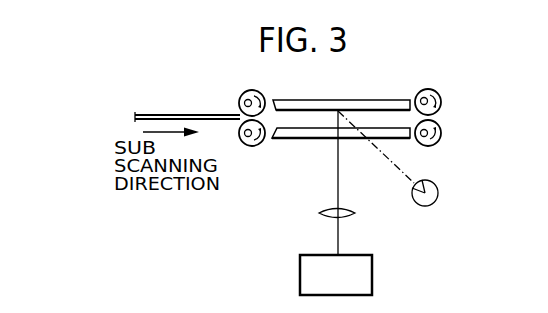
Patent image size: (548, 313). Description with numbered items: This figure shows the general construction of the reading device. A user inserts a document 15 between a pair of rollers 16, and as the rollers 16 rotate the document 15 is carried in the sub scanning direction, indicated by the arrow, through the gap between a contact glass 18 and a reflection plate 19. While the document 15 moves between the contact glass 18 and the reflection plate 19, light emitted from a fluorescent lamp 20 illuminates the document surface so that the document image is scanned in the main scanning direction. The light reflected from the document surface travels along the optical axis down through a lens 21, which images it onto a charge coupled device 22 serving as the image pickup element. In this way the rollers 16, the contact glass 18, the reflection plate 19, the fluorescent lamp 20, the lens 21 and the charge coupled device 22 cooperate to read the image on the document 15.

The document 15 is at (180, 114).
The rollers 16 is at (250, 148).
The contact glass 18 is at (310, 140).
The reflection plate 19 is at (318, 99).
The fluorescent lamp 20 is at (438, 190).
The lens 21 is at (352, 216).
The charge coupled device (CCD) 22 is at (373, 272).